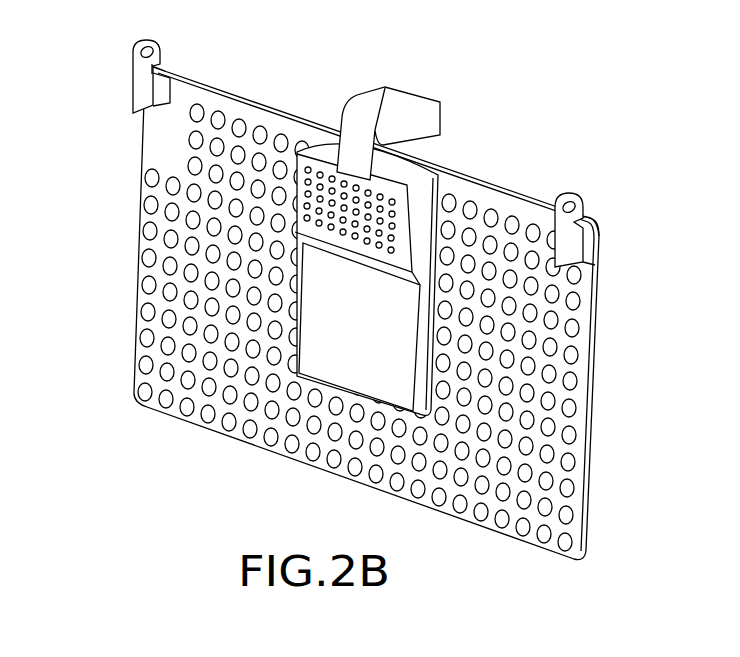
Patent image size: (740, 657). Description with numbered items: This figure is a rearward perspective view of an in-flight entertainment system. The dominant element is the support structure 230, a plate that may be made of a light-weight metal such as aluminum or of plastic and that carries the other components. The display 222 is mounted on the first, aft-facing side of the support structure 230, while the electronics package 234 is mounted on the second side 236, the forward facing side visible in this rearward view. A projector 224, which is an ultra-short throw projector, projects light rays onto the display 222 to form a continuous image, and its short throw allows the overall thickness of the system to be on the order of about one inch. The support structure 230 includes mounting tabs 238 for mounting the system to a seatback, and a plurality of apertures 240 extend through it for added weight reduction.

The display 222 is at (590, 238).
The projector 224 is at (389, 107).
The support structure 230 is at (157, 161).
The electronics package 234 is at (347, 355).
The second side 236 is at (577, 293).
The mounting tabs 238 is at (141, 92).
The apertures 240 is at (146, 311).